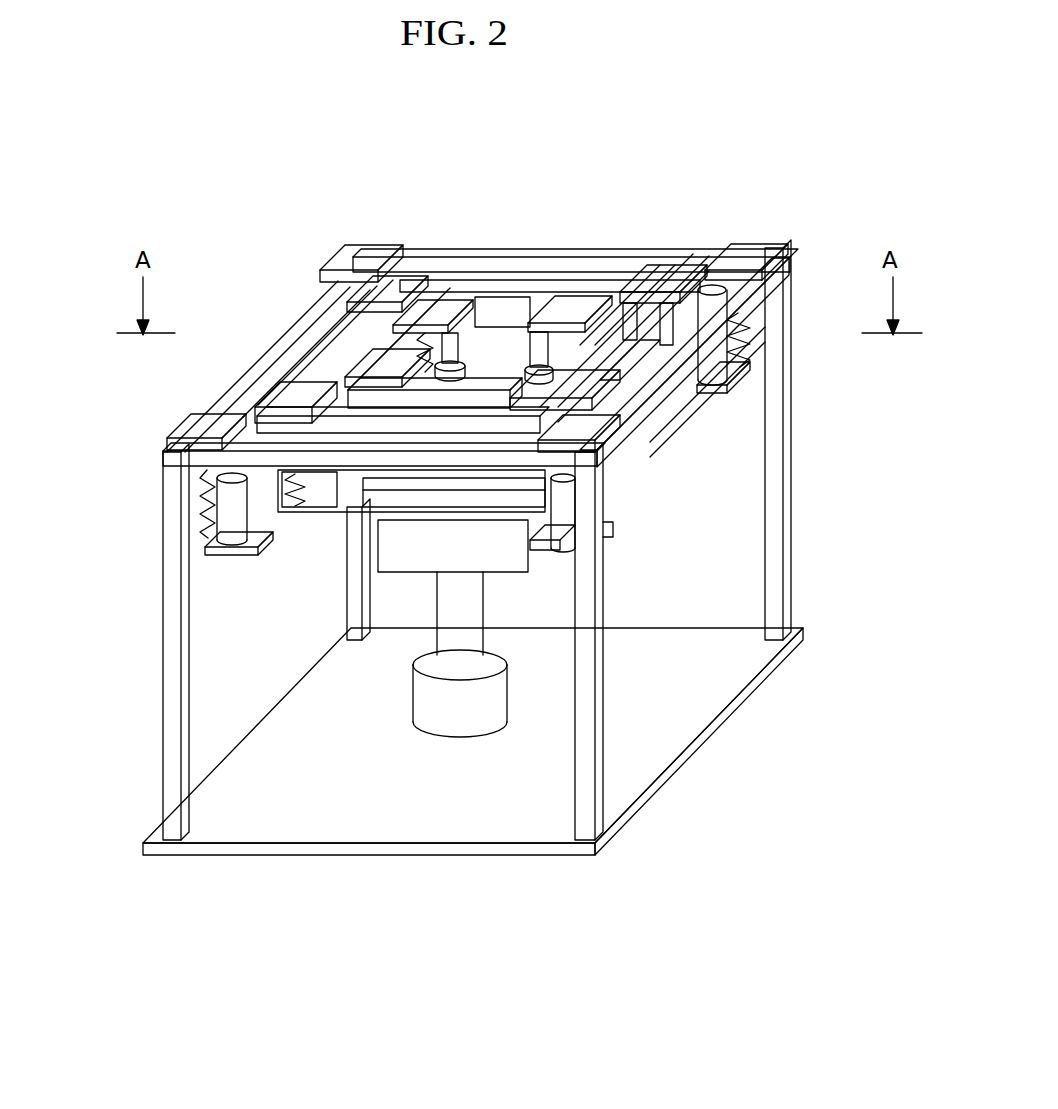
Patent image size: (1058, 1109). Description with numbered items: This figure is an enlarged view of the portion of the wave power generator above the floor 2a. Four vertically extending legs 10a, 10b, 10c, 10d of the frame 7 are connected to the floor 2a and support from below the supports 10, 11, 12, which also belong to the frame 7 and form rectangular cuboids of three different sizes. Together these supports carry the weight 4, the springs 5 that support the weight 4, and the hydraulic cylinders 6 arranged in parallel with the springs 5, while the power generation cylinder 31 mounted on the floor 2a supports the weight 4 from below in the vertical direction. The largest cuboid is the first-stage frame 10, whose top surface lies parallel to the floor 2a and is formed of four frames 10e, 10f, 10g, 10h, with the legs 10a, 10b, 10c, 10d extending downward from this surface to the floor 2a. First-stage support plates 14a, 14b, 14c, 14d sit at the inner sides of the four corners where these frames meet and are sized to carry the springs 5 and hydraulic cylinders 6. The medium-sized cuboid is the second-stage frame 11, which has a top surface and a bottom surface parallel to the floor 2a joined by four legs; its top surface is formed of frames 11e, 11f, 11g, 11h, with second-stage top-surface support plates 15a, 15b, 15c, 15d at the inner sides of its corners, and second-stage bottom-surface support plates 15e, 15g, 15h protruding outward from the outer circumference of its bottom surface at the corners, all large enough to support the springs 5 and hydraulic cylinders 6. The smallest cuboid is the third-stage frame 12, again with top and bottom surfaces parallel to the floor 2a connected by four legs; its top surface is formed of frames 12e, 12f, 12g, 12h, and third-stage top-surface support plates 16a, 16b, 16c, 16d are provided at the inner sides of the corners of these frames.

The floor 2a is at (493, 856).
The weight 4 is at (400, 560).
The springs 5 is at (205, 495).
The hydraulic cylinders 6 is at (232, 512).
The frame 7 is at (805, 250).
The first-stage frame 10 is at (486, 505).
The leg 10a is at (780, 497).
The leg 10b is at (350, 622).
The leg 10c is at (170, 716).
The leg 10d is at (600, 660).
The frame 10e is at (500, 257).
The frame 10f is at (327, 298).
The frame 10g is at (200, 461).
The frame 10h is at (778, 293).
The second-stage frame 11 is at (480, 398).
The frame 11e is at (620, 282).
The frame 11f is at (345, 322).
The frame 11g is at (325, 433).
The frame 11h is at (697, 395).
The third-stage frame 12 is at (450, 377).
The frame 12e is at (508, 318).
The frame 12f is at (373, 345).
The frame 12g is at (453, 410).
The frame 12h is at (613, 300).
The first-stage support plate 14a is at (745, 255).
The first-stage support plate 14b is at (350, 270).
The first-stage support plate 14c is at (190, 430).
The first-stage support plate 14d is at (587, 432).
The second-stage top-surface support plate 15a is at (677, 275).
The second-stage top-surface support plate 15b is at (402, 283).
The second-stage top-surface support plate 15c is at (263, 400).
The second-stage top-surface support plate 15d is at (565, 393).
The second-stage bottom-surface support plate 15e is at (745, 380).
The second-stage bottom-surface support plate 15g is at (240, 547).
The second-stage bottom-surface support plate 15h is at (608, 530).
The third-stage top-surface support plate 16a is at (570, 305).
The third-stage top-surface support plate 16b is at (440, 292).
The third-stage top-surface support plate 16c is at (392, 352).
The third-stage top-surface support plate 16d is at (633, 358).
The power generation cylinder 31 is at (445, 722).